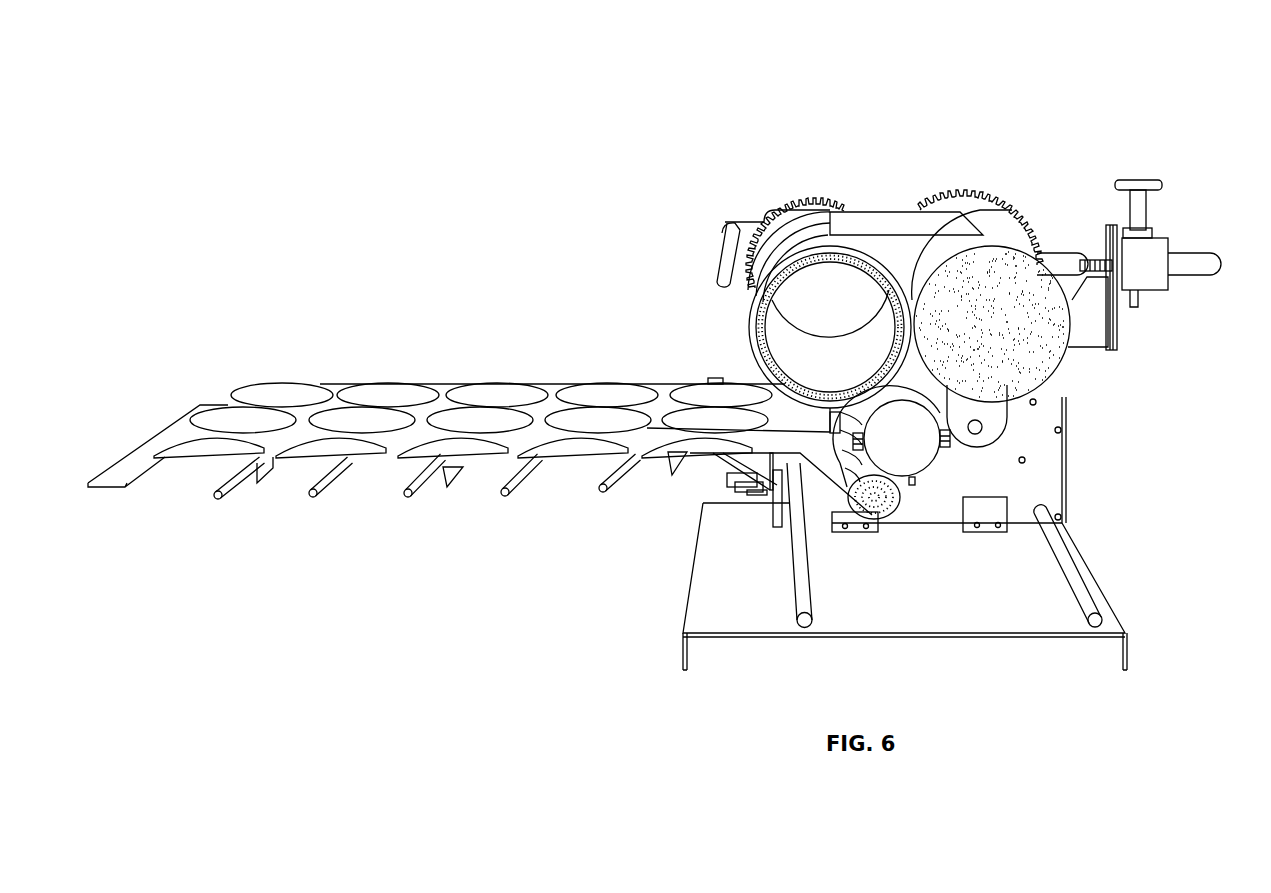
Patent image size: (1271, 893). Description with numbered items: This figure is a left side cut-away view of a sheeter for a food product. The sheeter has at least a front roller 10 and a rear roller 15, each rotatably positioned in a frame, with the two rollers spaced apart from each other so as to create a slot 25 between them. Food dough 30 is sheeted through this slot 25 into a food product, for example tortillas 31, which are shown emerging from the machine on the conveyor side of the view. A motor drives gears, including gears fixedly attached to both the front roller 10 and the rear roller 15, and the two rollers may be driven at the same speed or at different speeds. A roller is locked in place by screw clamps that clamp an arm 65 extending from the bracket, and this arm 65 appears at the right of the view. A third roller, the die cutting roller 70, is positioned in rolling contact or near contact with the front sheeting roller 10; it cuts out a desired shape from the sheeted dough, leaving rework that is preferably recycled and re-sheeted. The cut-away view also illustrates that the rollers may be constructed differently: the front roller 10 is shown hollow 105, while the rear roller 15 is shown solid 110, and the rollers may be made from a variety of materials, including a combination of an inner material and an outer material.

The front roller 10 is at (777, 263).
The rear roller 15 is at (1013, 238).
The slot 25 is at (912, 298).
The food dough 30 is at (900, 248).
The tortillas 31 is at (612, 392).
The arm 65 is at (1068, 253).
The die cutting roller 70 is at (915, 442).
The hollow roller 105 is at (808, 308).
The solid roller 110 is at (998, 330).